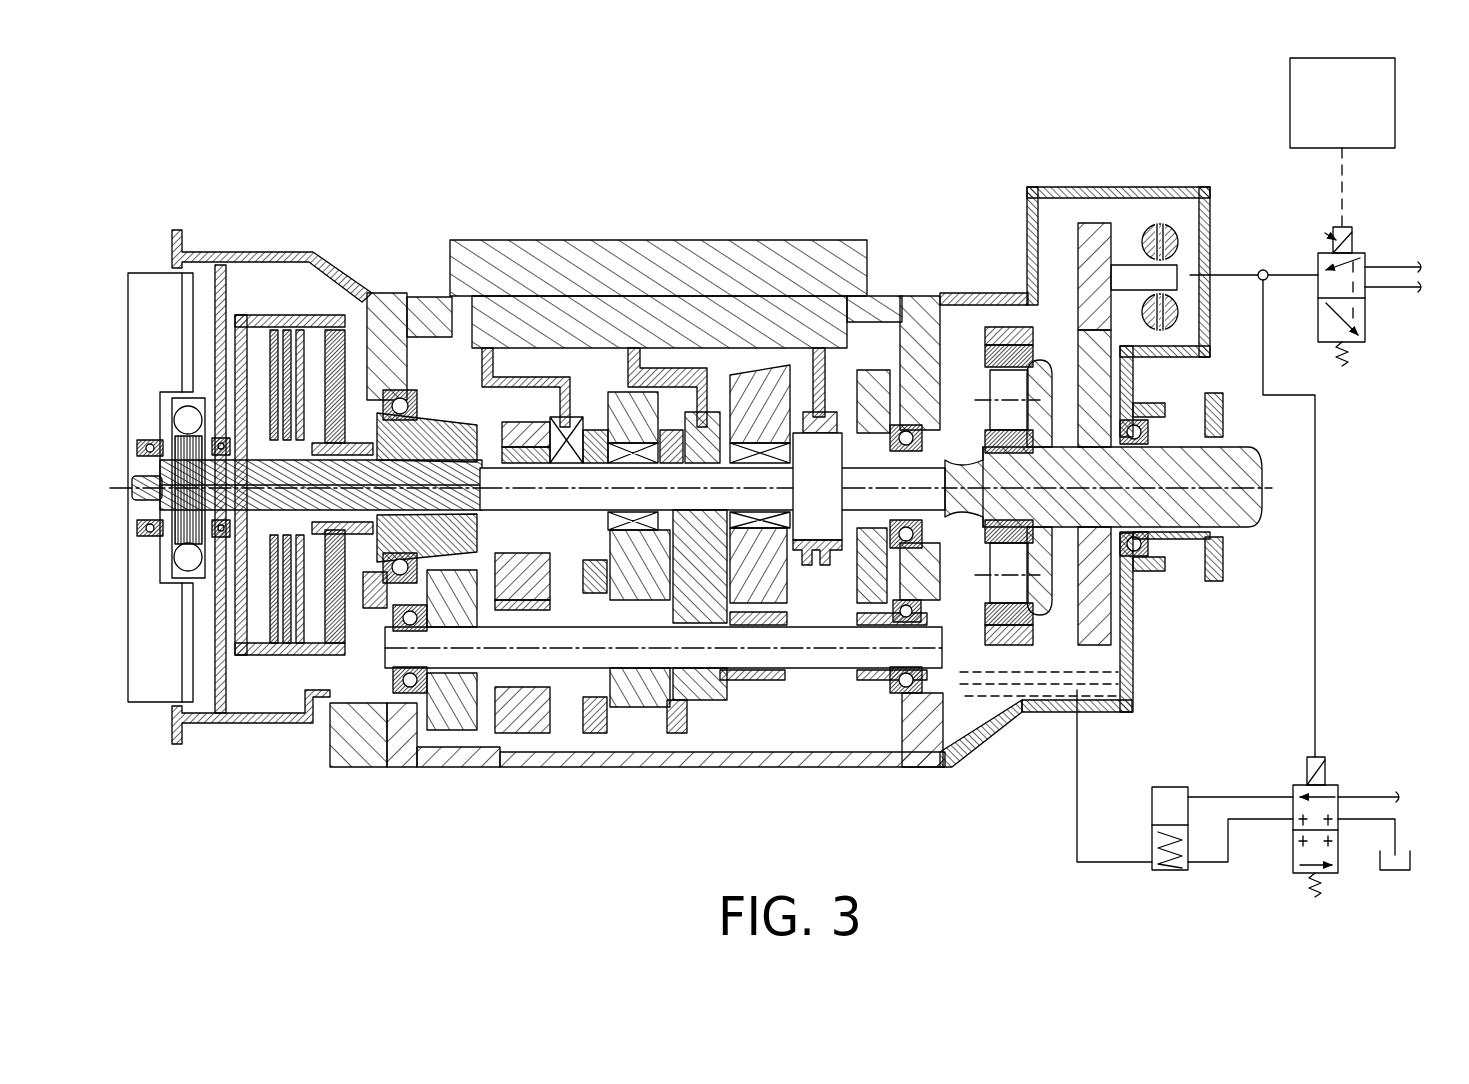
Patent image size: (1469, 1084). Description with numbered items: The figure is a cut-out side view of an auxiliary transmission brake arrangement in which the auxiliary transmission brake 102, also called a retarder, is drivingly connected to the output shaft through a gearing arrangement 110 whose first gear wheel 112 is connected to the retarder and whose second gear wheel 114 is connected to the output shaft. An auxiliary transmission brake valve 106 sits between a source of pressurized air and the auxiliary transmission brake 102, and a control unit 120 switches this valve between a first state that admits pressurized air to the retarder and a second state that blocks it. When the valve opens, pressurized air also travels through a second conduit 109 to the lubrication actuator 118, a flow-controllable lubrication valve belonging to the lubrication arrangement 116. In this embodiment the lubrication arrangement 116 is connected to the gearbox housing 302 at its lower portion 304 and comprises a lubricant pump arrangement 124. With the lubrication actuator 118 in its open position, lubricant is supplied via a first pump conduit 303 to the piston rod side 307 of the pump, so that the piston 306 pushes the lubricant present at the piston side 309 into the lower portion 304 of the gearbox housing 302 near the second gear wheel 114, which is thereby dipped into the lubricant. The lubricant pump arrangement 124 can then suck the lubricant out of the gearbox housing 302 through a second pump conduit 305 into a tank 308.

The auxiliary transmission brake 102 is at (1163, 212).
The auxiliary transmission brake valve 106 is at (1380, 243).
The second conduit 109 is at (1318, 600).
The gearing arrangement 110 is at (1066, 283).
The first gear wheel 112 is at (1077, 253).
The second gear wheel 114 is at (1110, 605).
The lubrication arrangement 116 is at (1366, 698).
The lubrication actuator 118 is at (1357, 774).
The control unit 120 is at (1290, 98).
The lubricant pump arrangement 124 is at (1140, 812).
The gearbox housing 302 is at (1130, 692).
The first pump conduit 303 is at (1212, 797).
The lower portion 304 is at (1050, 723).
The second pump conduit 305 is at (1205, 866).
The piston 306 is at (1150, 830).
The piston rod side 307 is at (1202, 831).
The tank 308 is at (1395, 872).
The piston side 309 is at (1160, 872).